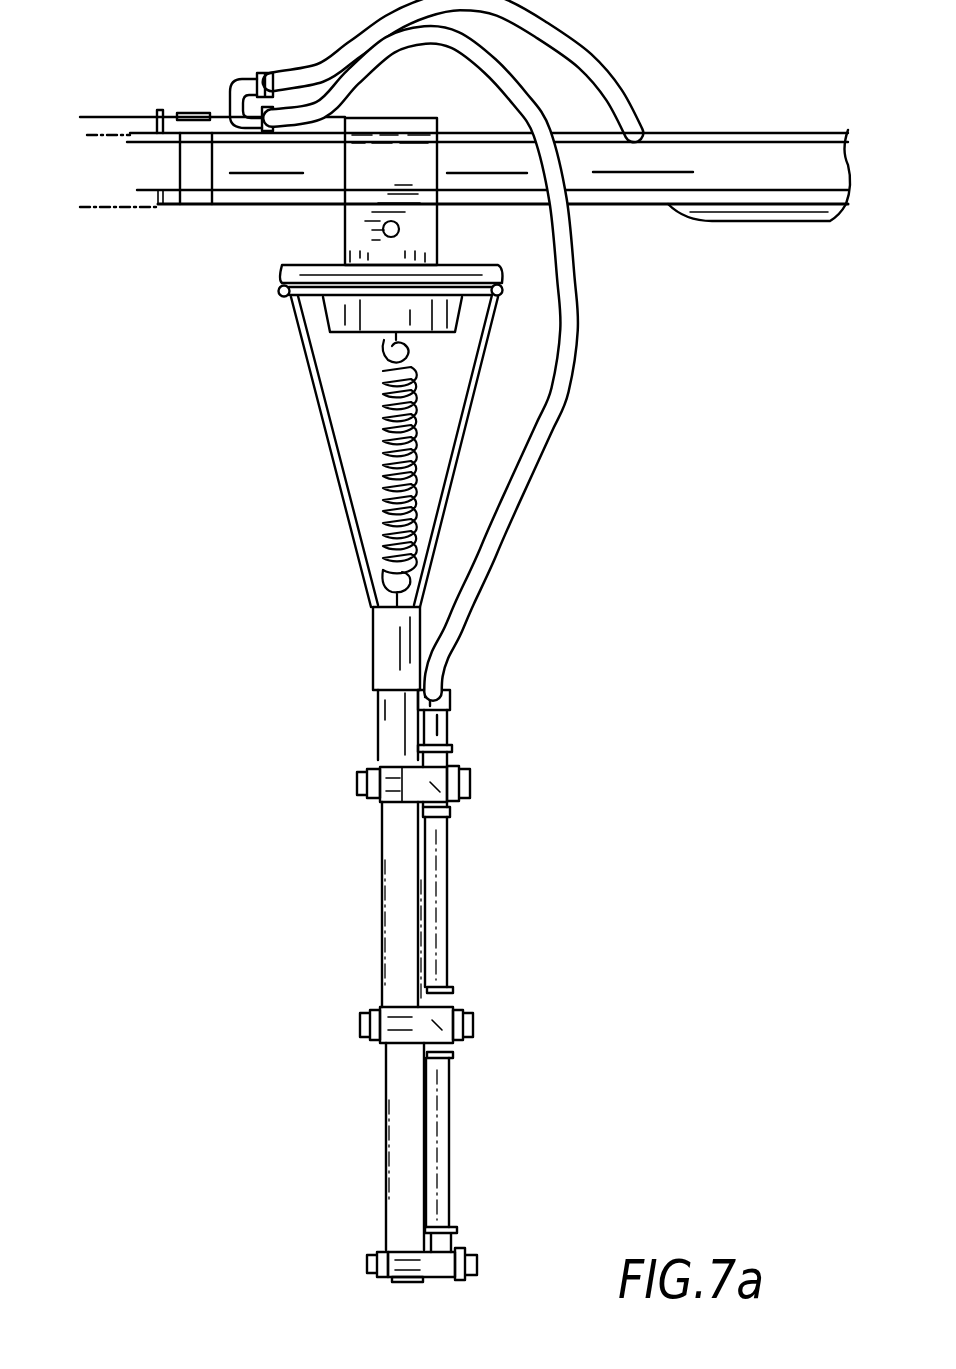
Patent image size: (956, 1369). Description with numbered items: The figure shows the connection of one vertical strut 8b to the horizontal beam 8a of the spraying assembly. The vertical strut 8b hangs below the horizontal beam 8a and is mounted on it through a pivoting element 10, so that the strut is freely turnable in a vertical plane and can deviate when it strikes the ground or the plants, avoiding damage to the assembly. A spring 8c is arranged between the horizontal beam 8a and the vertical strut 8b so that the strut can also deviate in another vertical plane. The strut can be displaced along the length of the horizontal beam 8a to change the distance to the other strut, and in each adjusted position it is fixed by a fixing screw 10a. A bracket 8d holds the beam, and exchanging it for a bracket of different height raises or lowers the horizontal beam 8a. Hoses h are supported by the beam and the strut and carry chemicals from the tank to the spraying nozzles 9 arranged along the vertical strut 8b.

The horizontal beam 8a is at (165, 207).
The vertical strut 8b is at (390, 902).
The spring 8c is at (380, 503).
The bracket 8d is at (335, 452).
The spraying nozzle 9 is at (440, 790).
The pivoting element 10 is at (350, 227).
The fixing screw 10a is at (399, 235).
The hose h is at (604, 84).